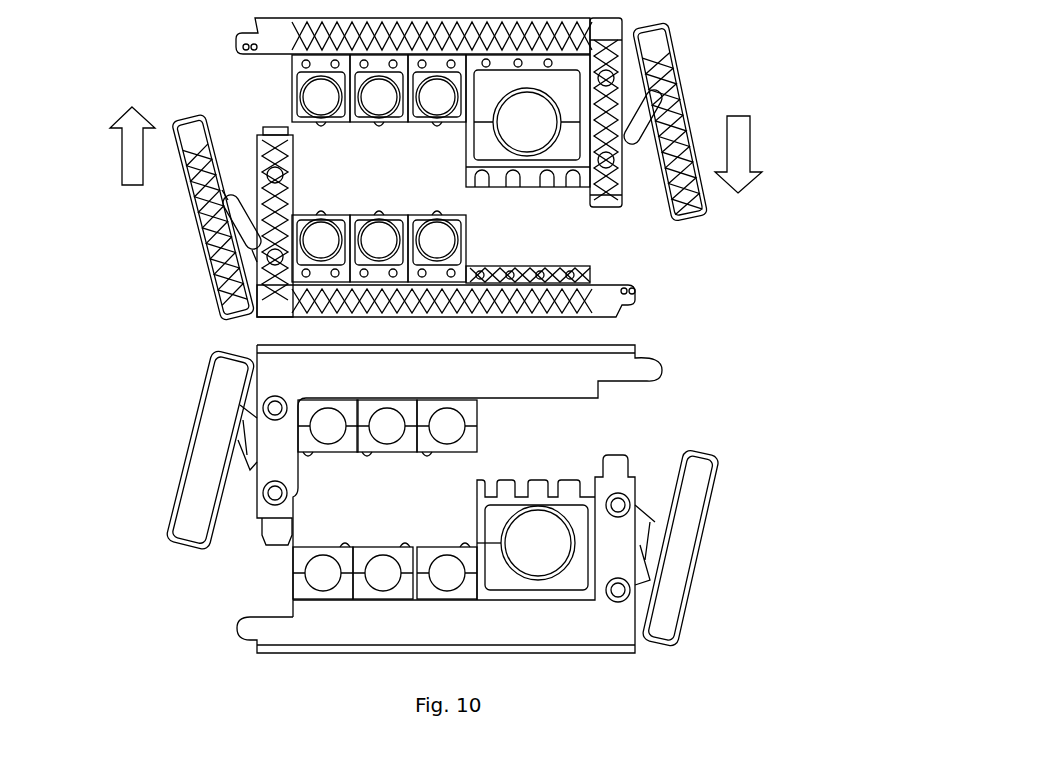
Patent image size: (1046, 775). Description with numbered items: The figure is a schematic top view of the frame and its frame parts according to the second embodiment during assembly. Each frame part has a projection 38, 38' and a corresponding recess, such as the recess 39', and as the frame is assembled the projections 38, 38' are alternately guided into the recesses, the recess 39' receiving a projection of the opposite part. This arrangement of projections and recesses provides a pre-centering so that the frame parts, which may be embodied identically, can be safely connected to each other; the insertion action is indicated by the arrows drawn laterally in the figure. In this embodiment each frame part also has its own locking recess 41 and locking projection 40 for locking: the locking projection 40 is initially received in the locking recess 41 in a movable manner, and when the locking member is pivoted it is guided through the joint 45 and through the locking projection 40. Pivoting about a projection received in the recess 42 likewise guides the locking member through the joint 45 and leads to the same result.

The projection 38 is at (444, 500).
The projection 38' is at (379, 120).
The recess 39' is at (523, 317).
The locking projection 40 is at (588, 44).
The locking recess 41 is at (634, 36).
The recess 42 is at (218, 143).
The joint 45 is at (222, 221).